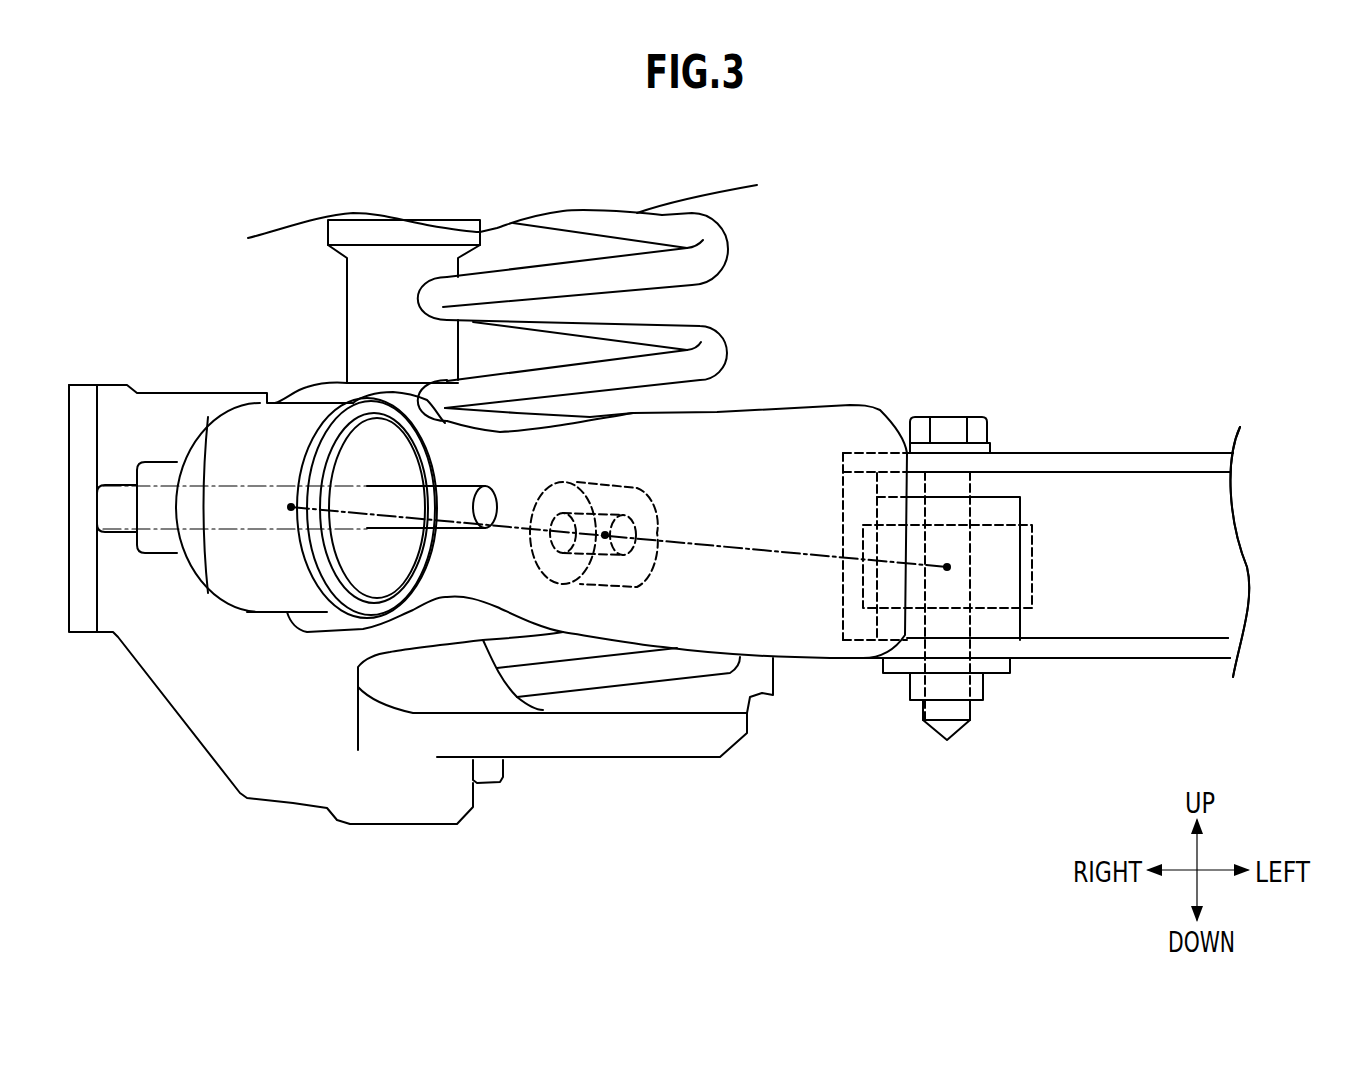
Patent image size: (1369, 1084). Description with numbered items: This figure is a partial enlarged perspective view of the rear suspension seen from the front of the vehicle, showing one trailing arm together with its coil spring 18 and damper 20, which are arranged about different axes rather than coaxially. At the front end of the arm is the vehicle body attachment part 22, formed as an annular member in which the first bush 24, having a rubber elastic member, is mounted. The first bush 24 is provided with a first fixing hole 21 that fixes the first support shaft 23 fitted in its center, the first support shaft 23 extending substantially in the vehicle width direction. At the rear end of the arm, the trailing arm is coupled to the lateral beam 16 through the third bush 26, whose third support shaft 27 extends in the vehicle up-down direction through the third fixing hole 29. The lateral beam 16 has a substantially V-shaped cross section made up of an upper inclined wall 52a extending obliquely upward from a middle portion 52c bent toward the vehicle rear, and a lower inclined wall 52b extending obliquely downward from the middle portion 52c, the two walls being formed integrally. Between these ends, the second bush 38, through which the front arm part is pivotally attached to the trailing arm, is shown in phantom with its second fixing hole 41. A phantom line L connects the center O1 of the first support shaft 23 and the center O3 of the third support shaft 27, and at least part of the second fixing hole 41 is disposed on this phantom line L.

The lateral beam 16 is at (1192, 433).
The coil spring 18 is at (727, 250).
The damper 20 is at (347, 300).
The first fixing hole 21 is at (268, 527).
The vehicle body attachment part 22 is at (293, 632).
The first support shaft 23 is at (490, 498).
The first bush 24 is at (341, 588).
The third bush 26 is at (1020, 508).
The third support shaft 27 is at (970, 582).
The third fixing hole 29 is at (957, 541).
The second bush 38 is at (623, 470).
The second fixing hole 41 is at (636, 553).
The upper inclined wall 52a is at (1230, 460).
The lower inclined wall 52b is at (1228, 648).
The middle portion 52c is at (1222, 547).
The center of the first support shaft O1 is at (290, 506).
The center of the third support shaft O3 is at (950, 570).
The phantom line L is at (727, 547).